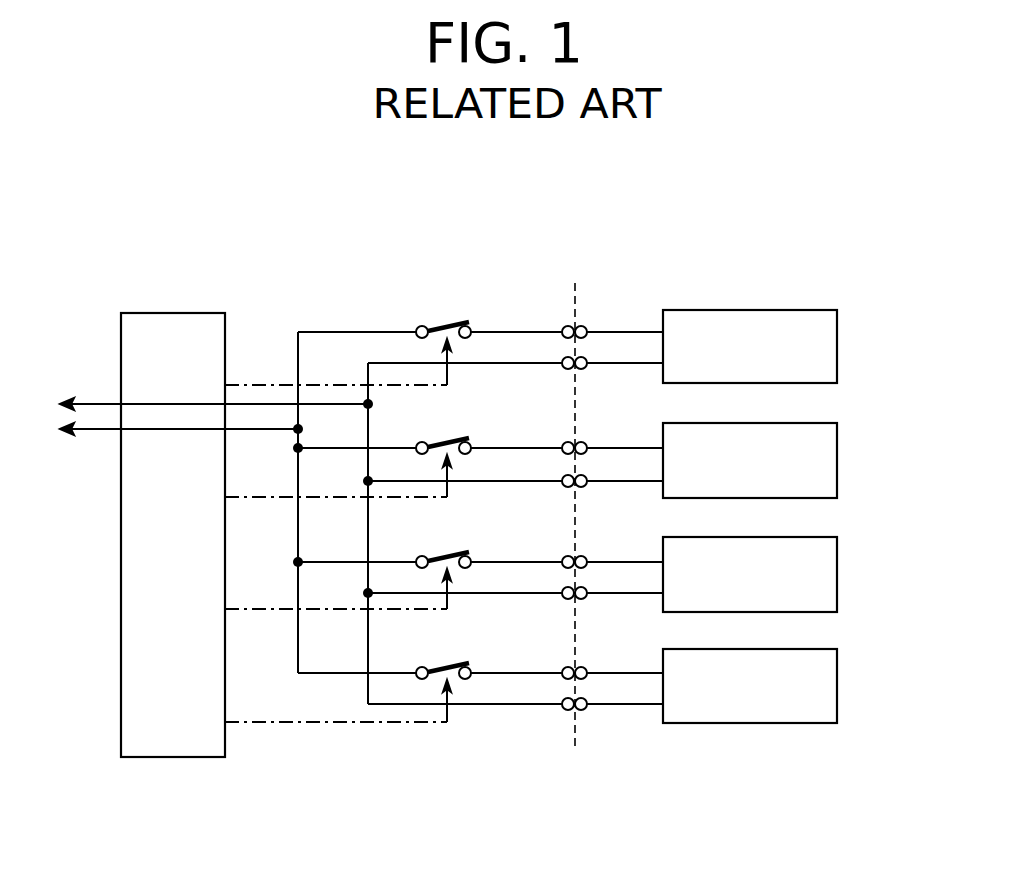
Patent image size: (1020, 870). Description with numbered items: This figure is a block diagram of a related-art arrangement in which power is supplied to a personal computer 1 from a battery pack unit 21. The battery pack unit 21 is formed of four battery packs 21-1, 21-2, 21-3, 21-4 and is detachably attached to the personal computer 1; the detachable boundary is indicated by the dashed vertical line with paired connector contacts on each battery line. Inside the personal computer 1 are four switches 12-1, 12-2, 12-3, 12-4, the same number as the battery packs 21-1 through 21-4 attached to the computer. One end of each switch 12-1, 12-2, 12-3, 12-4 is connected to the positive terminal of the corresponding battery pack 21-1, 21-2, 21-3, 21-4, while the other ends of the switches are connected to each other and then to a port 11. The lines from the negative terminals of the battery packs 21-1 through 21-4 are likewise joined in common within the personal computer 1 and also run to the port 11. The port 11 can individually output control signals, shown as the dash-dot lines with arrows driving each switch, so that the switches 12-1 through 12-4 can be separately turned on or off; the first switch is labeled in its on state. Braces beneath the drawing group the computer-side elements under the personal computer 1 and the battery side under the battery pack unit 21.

The personal computer 1 is at (361, 540).
The port 11 is at (177, 313).
The switch 12-1 is at (450, 322).
The switch 12-2 is at (462, 438).
The switch 12-3 is at (463, 552).
The switch 12-4 is at (480, 667).
The battery pack unit 21 is at (747, 558).
The battery pack 21-1 is at (825, 310).
The battery pack 21-2 is at (830, 423).
The battery pack 21-3 is at (830, 537).
The battery pack 21-4 is at (787, 666).